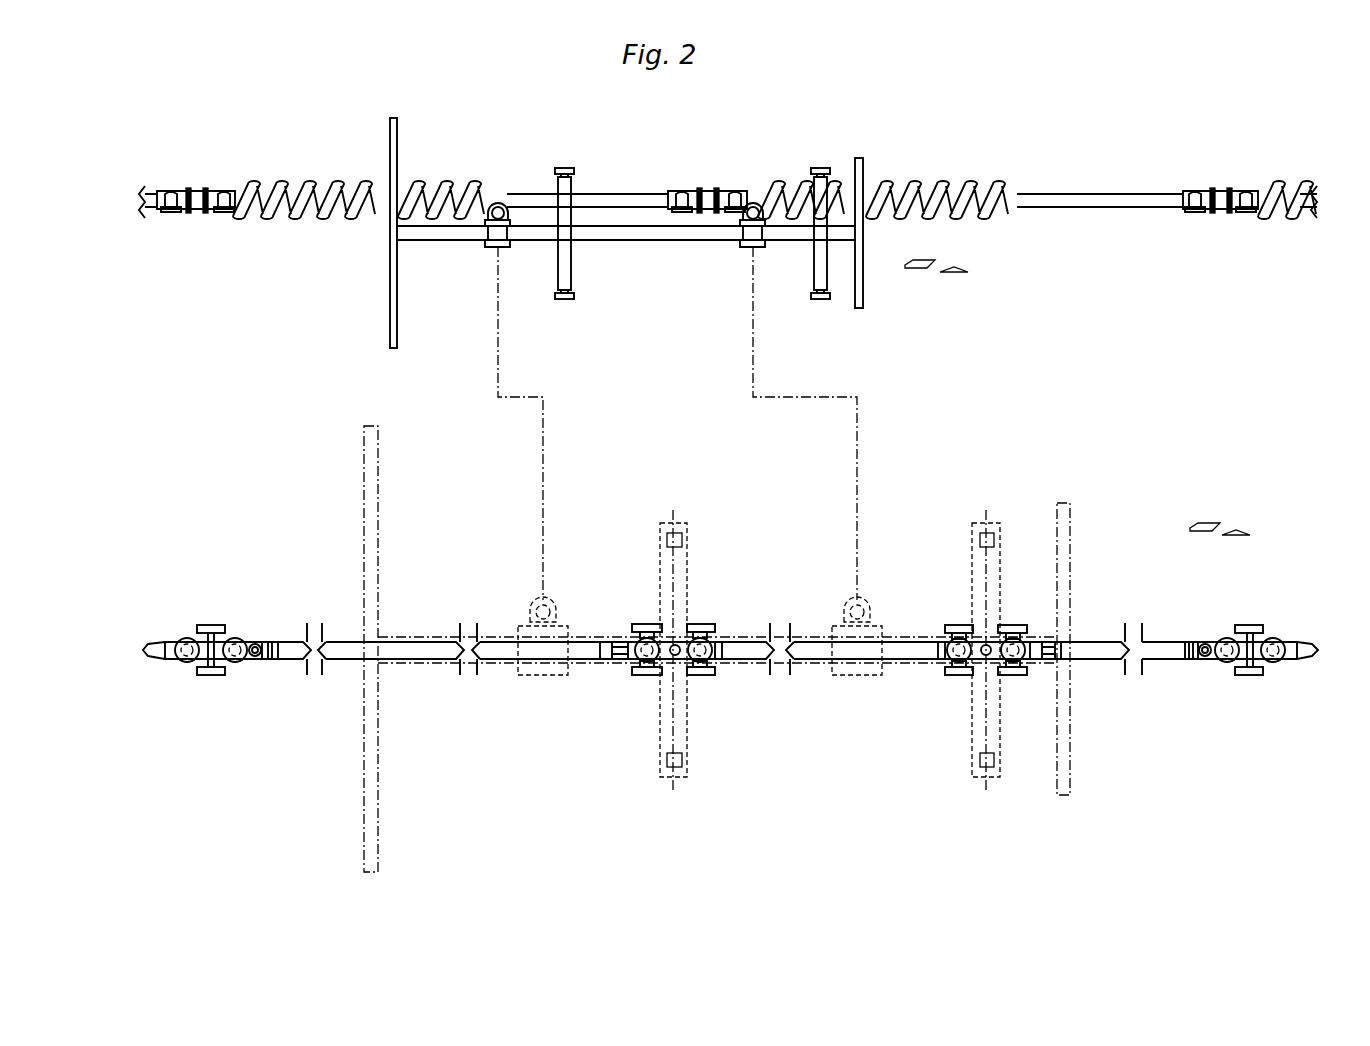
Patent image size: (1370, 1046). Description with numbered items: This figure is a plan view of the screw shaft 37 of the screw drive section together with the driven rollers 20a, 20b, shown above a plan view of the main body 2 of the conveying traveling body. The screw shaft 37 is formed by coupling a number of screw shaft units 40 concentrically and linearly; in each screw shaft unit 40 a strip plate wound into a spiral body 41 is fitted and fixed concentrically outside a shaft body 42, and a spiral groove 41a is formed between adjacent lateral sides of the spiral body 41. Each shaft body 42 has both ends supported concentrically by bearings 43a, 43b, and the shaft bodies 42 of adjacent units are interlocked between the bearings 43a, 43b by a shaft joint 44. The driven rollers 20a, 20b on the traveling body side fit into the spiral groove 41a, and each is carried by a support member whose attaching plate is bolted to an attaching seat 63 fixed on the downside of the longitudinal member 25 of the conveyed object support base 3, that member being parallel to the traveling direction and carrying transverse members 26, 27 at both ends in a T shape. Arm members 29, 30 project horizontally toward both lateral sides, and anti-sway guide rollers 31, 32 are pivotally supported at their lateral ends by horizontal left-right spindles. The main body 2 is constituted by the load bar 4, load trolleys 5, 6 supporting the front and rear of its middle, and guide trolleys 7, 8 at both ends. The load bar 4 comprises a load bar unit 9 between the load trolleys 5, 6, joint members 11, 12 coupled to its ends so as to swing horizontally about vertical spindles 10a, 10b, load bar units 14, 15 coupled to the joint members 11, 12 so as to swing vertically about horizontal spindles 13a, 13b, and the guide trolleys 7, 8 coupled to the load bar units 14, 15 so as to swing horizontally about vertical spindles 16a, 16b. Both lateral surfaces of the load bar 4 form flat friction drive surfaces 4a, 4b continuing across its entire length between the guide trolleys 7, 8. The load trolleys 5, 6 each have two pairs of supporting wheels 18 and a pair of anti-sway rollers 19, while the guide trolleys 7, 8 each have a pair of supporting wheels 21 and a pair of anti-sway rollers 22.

The main body 2 is at (732, 651).
The conveyed object support base 3 is at (719, 481).
The load bar 4 is at (730, 646).
The friction drive surface 4a is at (325, 659).
The friction drive surface 4b is at (425, 642).
The load trolley 5 is at (1001, 644).
The load trolley 6 is at (799, 650).
The guide trolley 7 is at (1252, 635).
The guide trolley 8 is at (732, 648).
The load bar unit 9 is at (805, 660).
The vertical spindle 10a is at (986, 655).
The vertical spindle 10b is at (677, 645).
The joint member 11 is at (1013, 626).
The joint member 12 is at (816, 640).
The horizontal spindle 13a is at (1040, 645).
The horizontal spindle 13b is at (612, 660).
The load bar unit 14 is at (1150, 648).
The load bar unit 15 is at (330, 648).
The vertical spindle 16a is at (1205, 657).
The vertical spindle 16b is at (255, 657).
The supporting wheel 18 is at (700, 675).
The anti-sway roller 19 is at (637, 650).
The driven roller 20a is at (755, 208).
The driven roller 20b is at (500, 207).
The supporting wheel 21 is at (200, 627).
The anti-sway roller 22 is at (236, 640).
The longitudinal member 25 is at (650, 242).
The transverse member 26 is at (862, 290).
The transverse member 27 is at (392, 290).
The arm member 29 is at (820, 240).
The arm member 30 is at (565, 240).
The anti-sway guide roller 31 is at (902, 472).
The anti-sway guide roller 32 is at (607, 472).
The screw shaft 37 is at (719, 313).
The screw shaft unit 40 is at (719, 316).
The spiral body 41 is at (774, 321).
The spiral groove 41a is at (440, 190).
The shaft body 42 is at (150, 196).
The bearing 43a is at (165, 212).
The bearing 43b is at (232, 192).
The shaft joint 44 is at (197, 212).
The attaching seat 63 is at (497, 248).